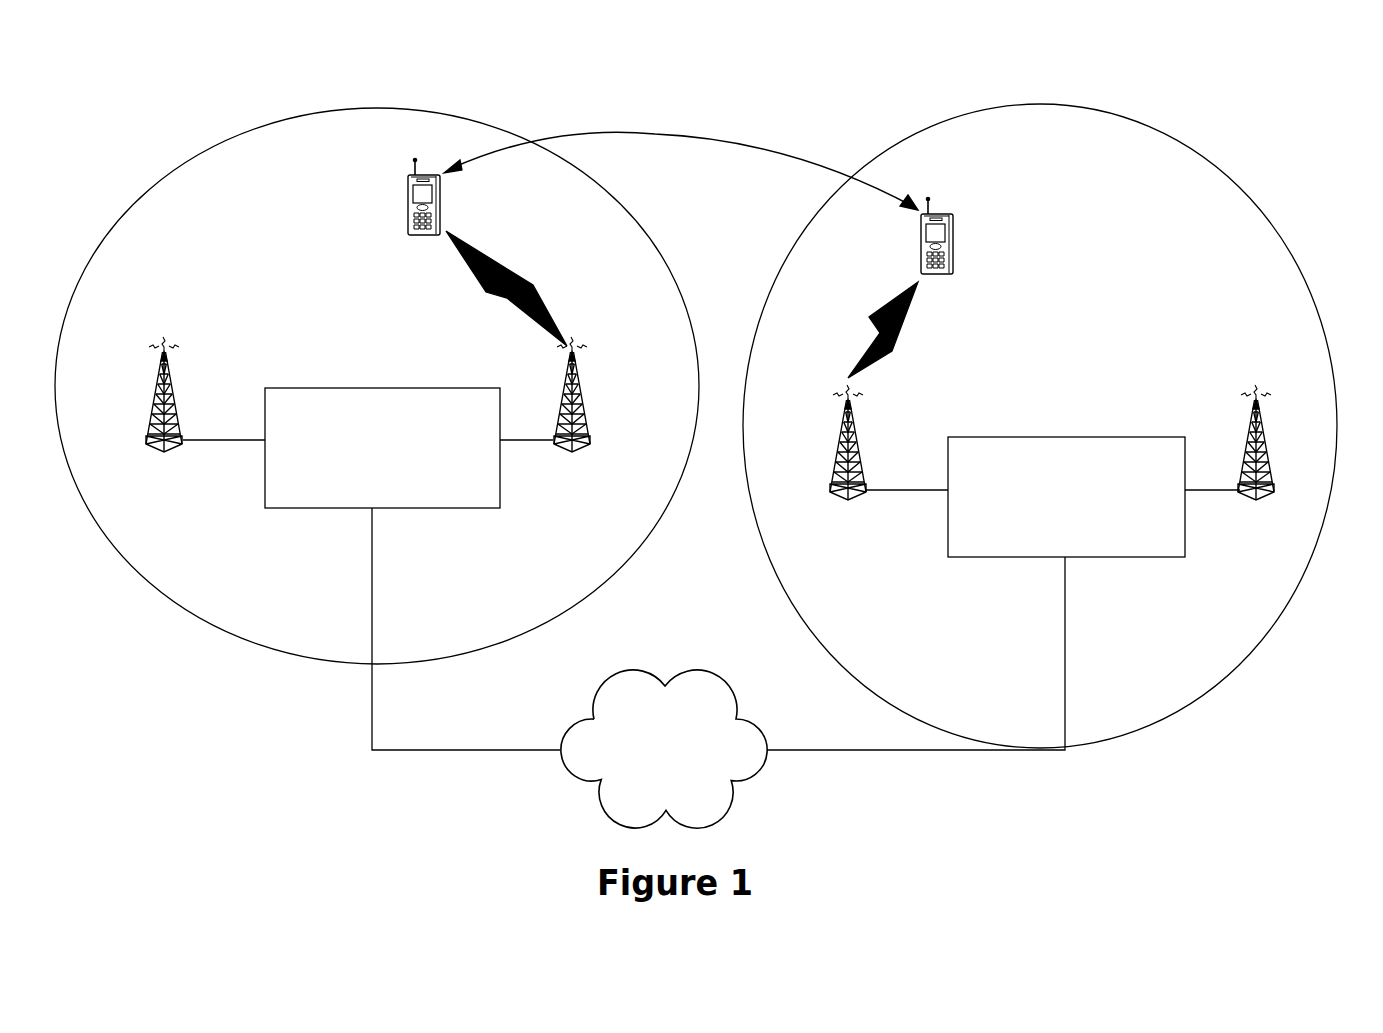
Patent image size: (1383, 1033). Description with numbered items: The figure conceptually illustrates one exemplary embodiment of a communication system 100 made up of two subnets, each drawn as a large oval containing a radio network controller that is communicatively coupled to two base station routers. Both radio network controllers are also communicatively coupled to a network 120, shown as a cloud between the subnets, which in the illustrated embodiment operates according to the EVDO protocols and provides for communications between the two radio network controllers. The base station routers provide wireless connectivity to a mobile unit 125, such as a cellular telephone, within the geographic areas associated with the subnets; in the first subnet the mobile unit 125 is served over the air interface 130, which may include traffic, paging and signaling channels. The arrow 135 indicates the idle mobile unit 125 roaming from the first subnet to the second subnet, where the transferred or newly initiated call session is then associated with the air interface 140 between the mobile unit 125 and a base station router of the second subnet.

The communication system 100 is at (1236, 96).
The network 120 is at (675, 779).
The mobile unit 125 is at (407, 212).
The air interface 130 is at (516, 272).
The arrow 135 is at (655, 134).
The air interface 140 is at (870, 320).